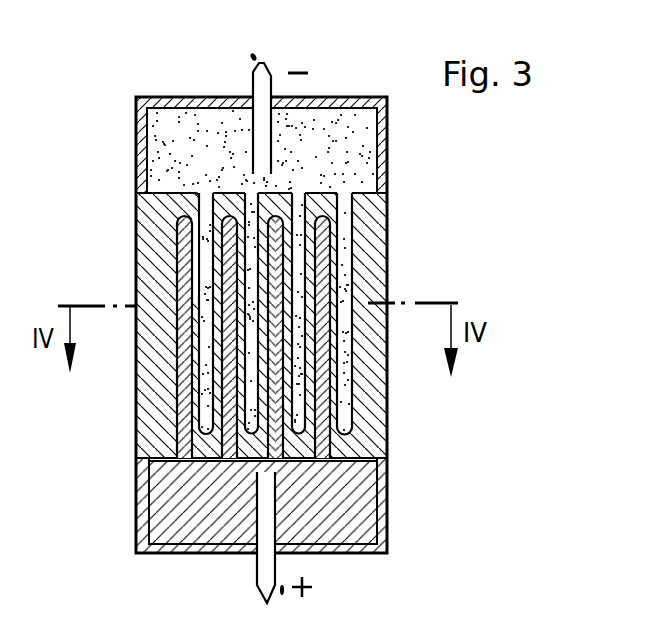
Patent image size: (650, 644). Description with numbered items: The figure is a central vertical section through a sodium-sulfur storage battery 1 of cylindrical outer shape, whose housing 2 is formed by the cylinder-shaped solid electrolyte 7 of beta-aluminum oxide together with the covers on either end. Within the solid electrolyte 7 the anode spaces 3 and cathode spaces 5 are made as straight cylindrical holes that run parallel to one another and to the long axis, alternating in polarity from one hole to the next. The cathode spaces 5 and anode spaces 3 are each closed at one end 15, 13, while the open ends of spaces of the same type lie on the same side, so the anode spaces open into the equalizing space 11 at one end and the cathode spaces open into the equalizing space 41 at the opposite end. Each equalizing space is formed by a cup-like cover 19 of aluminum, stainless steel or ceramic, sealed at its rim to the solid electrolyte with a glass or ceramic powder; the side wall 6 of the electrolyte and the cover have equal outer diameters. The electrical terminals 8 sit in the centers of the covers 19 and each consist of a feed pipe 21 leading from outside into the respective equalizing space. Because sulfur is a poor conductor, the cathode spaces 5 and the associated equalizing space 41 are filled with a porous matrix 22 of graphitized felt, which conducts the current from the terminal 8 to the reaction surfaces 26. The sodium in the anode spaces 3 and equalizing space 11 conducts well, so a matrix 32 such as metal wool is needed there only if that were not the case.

The electrochemical cell 1 is at (286, 321).
The housing 2 is at (289, 324).
The anode spaces 3 is at (265, 324).
The cathode spaces 5 is at (188, 400).
The housing side wall 6 is at (394, 202).
The solid electrolyte 7 is at (388, 330).
The electrical terminals 8 is at (252, 55).
The equalizing space 11 is at (384, 124).
The closed end of anode spaces 13 is at (350, 430).
The closed end of cathode spaces 15 is at (196, 337).
The cup-like cover 19 is at (355, 97).
The feed pipe 21 is at (252, 85).
The porous matrix 22 is at (157, 506).
The reaction surfaces 26 is at (170, 335).
The matrix 32 is at (155, 133).
The equalizing space 41 is at (373, 505).